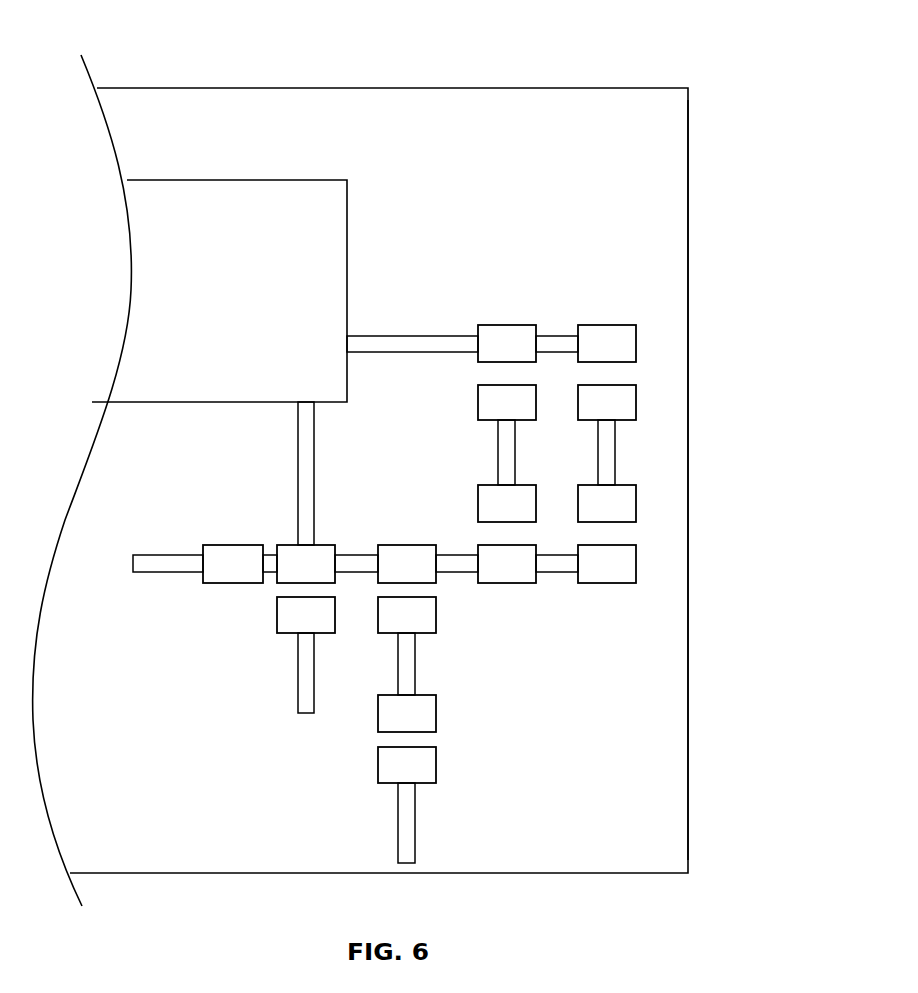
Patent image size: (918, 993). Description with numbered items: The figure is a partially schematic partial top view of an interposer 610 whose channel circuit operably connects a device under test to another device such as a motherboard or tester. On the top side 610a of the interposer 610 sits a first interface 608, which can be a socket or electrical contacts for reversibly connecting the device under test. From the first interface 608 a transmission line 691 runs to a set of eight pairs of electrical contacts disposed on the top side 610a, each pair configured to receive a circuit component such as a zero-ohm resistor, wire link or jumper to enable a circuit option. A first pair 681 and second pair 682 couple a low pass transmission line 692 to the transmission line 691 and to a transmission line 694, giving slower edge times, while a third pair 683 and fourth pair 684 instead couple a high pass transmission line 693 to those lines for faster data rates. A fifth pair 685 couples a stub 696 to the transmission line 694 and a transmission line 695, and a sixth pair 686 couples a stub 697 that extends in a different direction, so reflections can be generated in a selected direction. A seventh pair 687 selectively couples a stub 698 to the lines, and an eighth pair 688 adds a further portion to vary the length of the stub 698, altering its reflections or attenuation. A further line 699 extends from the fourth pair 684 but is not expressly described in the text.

The interposer 610 is at (595, 88).
The top side 610a is at (662, 689).
The first interface 608 is at (219, 291).
The transmission line 691 is at (452, 335).
The eighth pair of electrical contacts 688 is at (505, 383).
The seventh pair of electrical contacts 687 is at (637, 397).
The transmission line 694 is at (497, 452).
The transmission line 695 is at (615, 452).
The sixth pair of electrical contacts 686 is at (637, 557).
The fifth pair of electrical contacts 685 is at (537, 503).
The transmission line 692 is at (298, 460).
The stub 696 is at (167, 573).
The first pair of electrical contacts 681 is at (287, 545).
The transmission line 693 is at (355, 553).
The second pair of electrical contacts 682 is at (279, 583).
The stub 697 is at (298, 690).
The third pair of electrical contacts 683 is at (436, 580).
The stub 698 is at (415, 662).
The fourth pair of electrical contacts 684 is at (436, 720).
The outlet line 699 is at (415, 835).